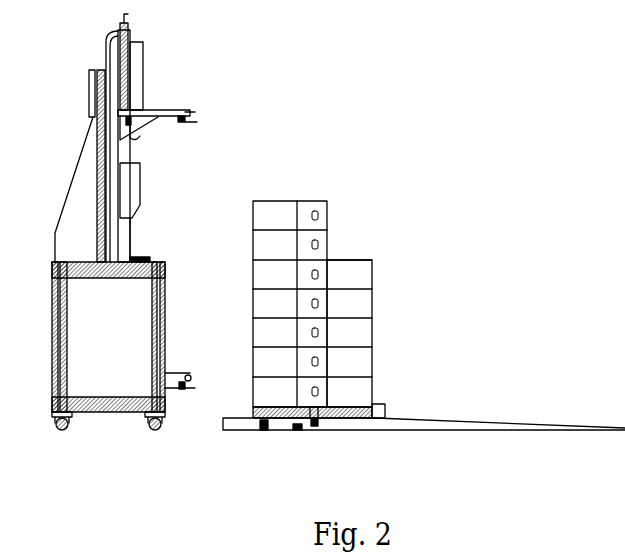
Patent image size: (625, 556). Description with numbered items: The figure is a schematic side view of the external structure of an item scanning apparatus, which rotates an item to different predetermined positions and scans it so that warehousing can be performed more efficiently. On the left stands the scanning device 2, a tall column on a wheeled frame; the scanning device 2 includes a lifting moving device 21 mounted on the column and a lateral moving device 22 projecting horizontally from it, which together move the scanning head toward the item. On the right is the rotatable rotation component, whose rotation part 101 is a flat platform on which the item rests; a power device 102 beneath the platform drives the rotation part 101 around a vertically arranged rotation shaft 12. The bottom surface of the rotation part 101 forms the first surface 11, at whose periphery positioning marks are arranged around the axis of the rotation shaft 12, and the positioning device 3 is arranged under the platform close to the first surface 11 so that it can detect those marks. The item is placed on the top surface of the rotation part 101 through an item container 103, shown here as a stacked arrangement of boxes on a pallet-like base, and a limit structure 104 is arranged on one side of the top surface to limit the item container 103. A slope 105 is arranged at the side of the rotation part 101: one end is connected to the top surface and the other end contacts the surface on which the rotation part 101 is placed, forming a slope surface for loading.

The scanning device 2 is at (187, 77).
The lifting moving device 21 is at (138, 52).
The lateral moving device 22 is at (162, 120).
The positioning device 3 is at (263, 432).
The first surface 11 is at (313, 432).
The rotation shaft 12 is at (319, 423).
The rotation part 101 is at (348, 418).
The power device 102 is at (296, 432).
The item container 103 is at (279, 408).
The limit structure 104 is at (381, 407).
The slope 105 is at (460, 422).